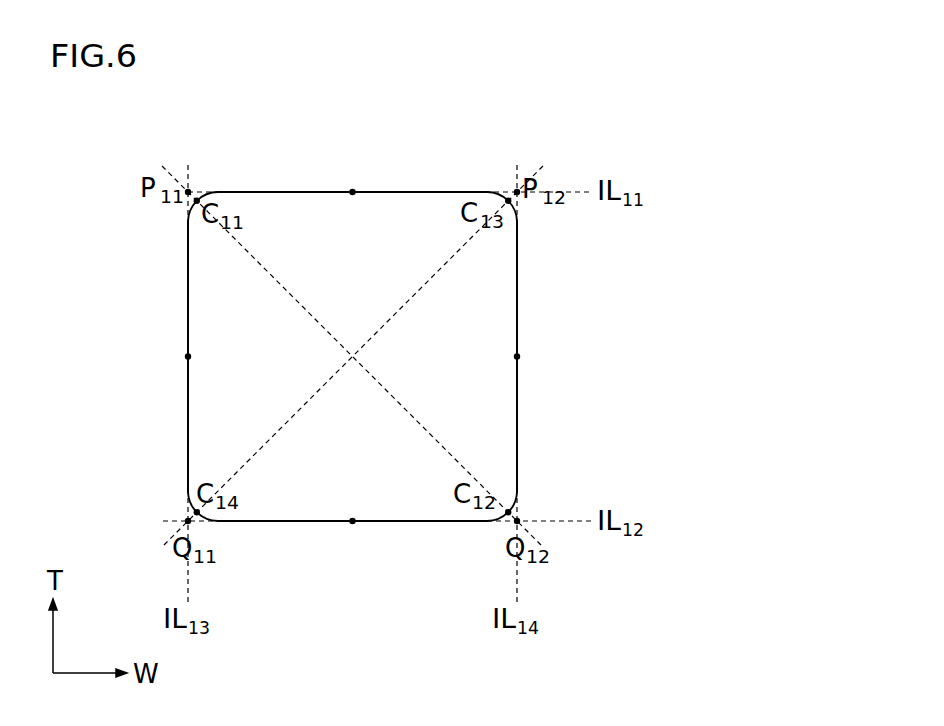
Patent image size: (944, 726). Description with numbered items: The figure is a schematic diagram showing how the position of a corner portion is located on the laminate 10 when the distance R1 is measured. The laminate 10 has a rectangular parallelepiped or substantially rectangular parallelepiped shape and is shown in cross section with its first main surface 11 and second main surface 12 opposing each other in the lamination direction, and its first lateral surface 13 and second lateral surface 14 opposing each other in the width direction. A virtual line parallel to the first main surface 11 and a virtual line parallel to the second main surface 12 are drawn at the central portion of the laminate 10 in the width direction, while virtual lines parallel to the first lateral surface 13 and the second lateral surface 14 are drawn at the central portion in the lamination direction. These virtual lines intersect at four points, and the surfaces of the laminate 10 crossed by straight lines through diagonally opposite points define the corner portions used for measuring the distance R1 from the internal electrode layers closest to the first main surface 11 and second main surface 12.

The laminate 10 is at (489, 143).
The first main surface 11 is at (322, 191).
The second main surface 12 is at (403, 522).
The first lateral surface 13 is at (188, 390).
The second lateral surface 14 is at (517, 313).